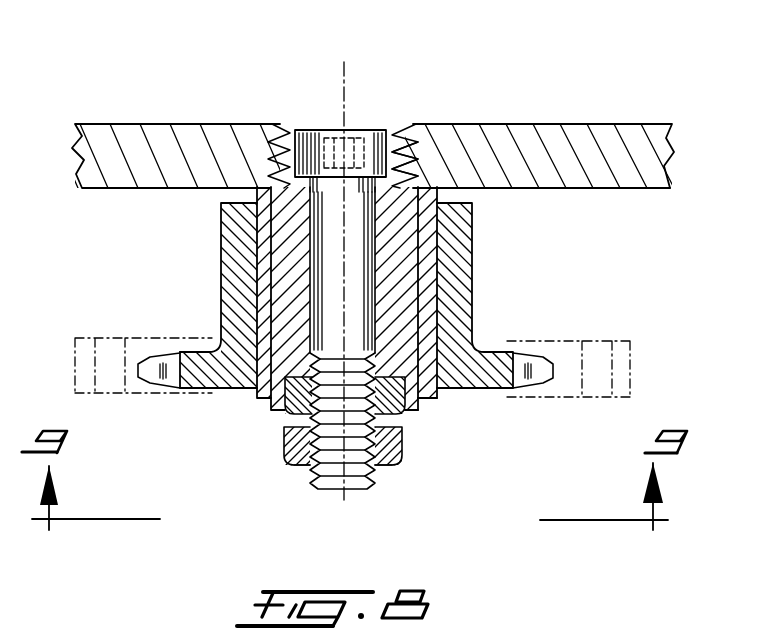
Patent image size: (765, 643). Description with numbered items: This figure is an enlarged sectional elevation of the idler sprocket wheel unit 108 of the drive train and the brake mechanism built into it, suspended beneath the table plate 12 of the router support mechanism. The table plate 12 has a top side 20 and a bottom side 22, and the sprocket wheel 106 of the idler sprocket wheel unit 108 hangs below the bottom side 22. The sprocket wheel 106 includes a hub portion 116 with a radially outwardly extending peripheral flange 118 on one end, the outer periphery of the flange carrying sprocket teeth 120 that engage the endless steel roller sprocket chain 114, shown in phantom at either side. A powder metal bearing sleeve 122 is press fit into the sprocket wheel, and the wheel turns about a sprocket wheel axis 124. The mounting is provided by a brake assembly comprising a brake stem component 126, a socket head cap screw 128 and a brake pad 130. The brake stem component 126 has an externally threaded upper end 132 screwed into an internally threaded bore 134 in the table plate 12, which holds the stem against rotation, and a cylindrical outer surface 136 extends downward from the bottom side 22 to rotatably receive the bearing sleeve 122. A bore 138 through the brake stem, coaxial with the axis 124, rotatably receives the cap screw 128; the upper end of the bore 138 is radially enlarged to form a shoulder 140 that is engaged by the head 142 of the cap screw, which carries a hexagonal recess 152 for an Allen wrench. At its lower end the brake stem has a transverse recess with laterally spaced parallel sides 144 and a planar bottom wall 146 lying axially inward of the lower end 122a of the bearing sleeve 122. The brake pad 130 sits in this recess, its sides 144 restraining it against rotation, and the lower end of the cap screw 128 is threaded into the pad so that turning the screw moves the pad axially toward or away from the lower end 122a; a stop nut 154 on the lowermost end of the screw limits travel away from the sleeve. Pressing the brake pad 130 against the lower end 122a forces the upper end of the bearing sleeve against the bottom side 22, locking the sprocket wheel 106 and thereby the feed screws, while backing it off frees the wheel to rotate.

The table plate 12 is at (210, 106).
The top side 20 is at (628, 123).
The bottom side 22 is at (628, 190).
The sprocket wheel 106 is at (488, 331).
The idler sprocket wheel unit 108 is at (397, 482).
The sprocket chain 114 is at (108, 336).
The hub portion 116 is at (221, 216).
The peripheral flange 118 is at (205, 345).
The sprocket teeth 120 is at (165, 375).
The bearing sleeve 122 is at (443, 197).
The lower end of bearing sleeve 122a is at (430, 407).
The sprocket wheel axis 124 is at (346, 96).
The brake stem component 126 is at (403, 263).
The socket head cap screw 128 is at (358, 326).
The brake pad 130 is at (280, 432).
The externally threaded upper end 132 is at (401, 128).
The internally threaded bore 134 is at (293, 132).
The cylindrical outer surface 136 is at (266, 262).
The bore 138 is at (290, 266).
The shoulder 140 is at (414, 151).
The head 142 is at (317, 140).
The parallel sides 144 is at (292, 408).
The planar bottom wall 146 is at (400, 430).
The hexagonal recess 152 is at (354, 142).
The stop nut 154 is at (292, 458).